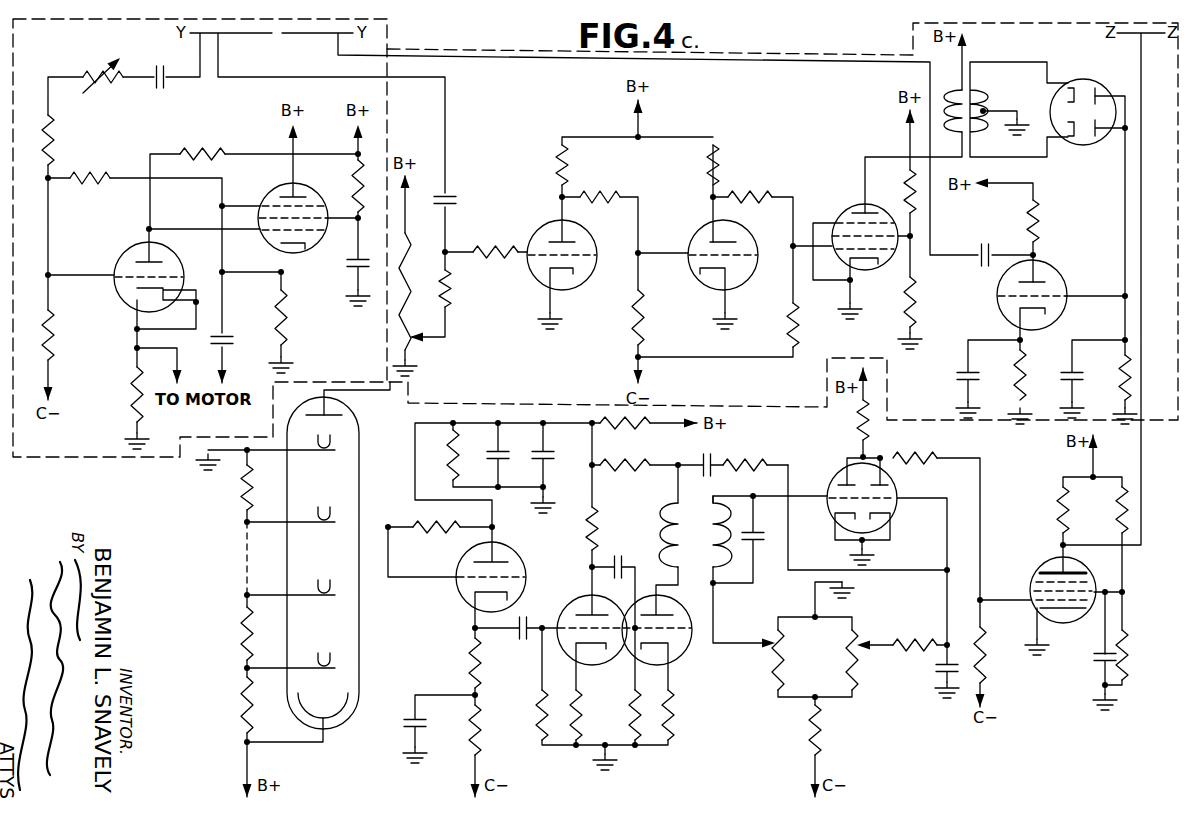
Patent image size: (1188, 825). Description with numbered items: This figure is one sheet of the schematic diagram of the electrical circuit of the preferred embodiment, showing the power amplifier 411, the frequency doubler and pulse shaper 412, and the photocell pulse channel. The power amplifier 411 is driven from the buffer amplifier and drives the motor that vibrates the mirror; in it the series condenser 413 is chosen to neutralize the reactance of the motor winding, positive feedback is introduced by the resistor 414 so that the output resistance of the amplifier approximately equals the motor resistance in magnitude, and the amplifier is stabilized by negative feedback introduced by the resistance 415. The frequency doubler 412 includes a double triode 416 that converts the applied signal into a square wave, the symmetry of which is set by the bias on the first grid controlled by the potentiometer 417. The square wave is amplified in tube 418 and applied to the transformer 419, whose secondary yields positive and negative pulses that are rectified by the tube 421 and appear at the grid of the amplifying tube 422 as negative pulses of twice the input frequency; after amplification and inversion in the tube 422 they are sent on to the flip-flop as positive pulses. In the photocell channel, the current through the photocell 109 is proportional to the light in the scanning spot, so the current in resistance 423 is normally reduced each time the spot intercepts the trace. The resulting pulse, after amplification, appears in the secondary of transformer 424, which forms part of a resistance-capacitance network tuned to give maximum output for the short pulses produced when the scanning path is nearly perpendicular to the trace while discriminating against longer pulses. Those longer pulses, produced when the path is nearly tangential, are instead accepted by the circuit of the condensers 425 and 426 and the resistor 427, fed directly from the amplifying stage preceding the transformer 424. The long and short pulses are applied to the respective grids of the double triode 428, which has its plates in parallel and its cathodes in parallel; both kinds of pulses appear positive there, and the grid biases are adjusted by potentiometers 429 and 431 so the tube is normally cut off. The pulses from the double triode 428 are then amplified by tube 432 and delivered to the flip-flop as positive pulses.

The photocell 109 is at (361, 639).
The power amplifier 411 is at (207, 127).
The frequency doubler and pulse shaper 412 is at (732, 116).
The series condenser 413 is at (227, 338).
The resistor 414 is at (134, 389).
The resistance 415 is at (76, 176).
The double triode 416 is at (746, 278).
The potentiometer 417 is at (410, 343).
The tube 418 is at (849, 209).
The transformer 419 is at (967, 59).
The tube 421 is at (1101, 80).
The amplifying tube 422 is at (996, 296).
The resistance 423 is at (437, 525).
The transformer 424 is at (700, 499).
The condenser 425 is at (712, 457).
The condenser 426 is at (940, 664).
The resistor 427 is at (618, 461).
The double triode 428 is at (882, 456).
The potentiometer 429 is at (854, 667).
The potentiometer 431 is at (776, 672).
The tube 432 is at (1047, 557).